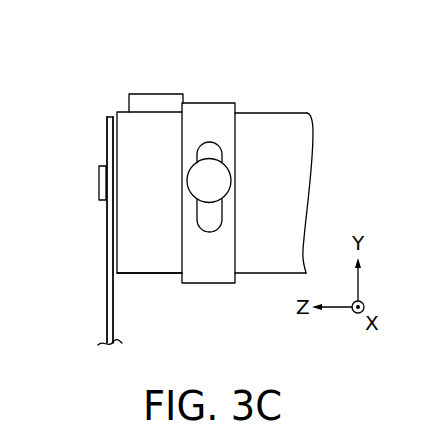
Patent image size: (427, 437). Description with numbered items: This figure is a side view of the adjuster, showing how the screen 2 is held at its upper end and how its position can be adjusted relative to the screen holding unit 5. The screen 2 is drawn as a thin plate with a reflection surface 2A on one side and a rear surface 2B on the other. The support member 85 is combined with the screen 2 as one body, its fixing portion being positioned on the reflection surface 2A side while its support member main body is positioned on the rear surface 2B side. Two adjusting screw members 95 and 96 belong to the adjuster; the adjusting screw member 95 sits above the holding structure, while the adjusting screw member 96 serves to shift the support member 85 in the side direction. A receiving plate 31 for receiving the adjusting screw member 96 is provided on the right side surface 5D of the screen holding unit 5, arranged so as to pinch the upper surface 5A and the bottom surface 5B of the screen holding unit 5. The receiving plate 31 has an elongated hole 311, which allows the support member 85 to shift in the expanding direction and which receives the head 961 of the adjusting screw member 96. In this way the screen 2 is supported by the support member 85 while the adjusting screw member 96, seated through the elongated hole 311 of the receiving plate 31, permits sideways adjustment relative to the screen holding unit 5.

The screen 2 is at (106, 125).
The reflection surface 2A is at (107, 302).
The rear surface 2B is at (113, 302).
The support member 85 is at (92, 176).
The adjusting screw member 95 is at (156, 88).
The receiving plate 31 is at (219, 96).
The elongated hole 311 is at (220, 145).
The head 961 is at (218, 176).
The adjusting screw member 96 is at (245, 186).
The screen holding unit 5 is at (295, 112).
The upper surface 5A is at (260, 112).
The bottom surface 5B is at (173, 276).
The right side surface 5D is at (305, 134).